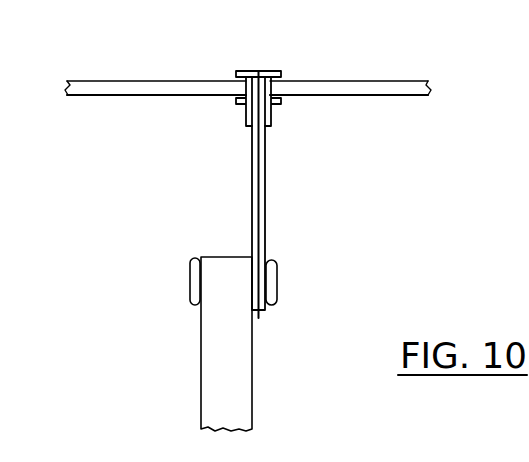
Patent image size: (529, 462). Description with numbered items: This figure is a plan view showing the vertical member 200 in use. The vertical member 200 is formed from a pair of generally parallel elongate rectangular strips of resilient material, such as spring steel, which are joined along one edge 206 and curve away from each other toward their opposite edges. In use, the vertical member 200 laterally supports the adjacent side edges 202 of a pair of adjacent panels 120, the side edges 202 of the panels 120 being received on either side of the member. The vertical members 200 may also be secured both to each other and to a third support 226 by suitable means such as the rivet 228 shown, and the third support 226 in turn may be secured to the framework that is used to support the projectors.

The panel 120 is at (116, 87).
The vertical member 200 is at (318, 193).
The side edge 202 is at (247, 84).
The edge 206 is at (258, 318).
The third support 226 is at (213, 370).
The rivet 228 is at (279, 288).